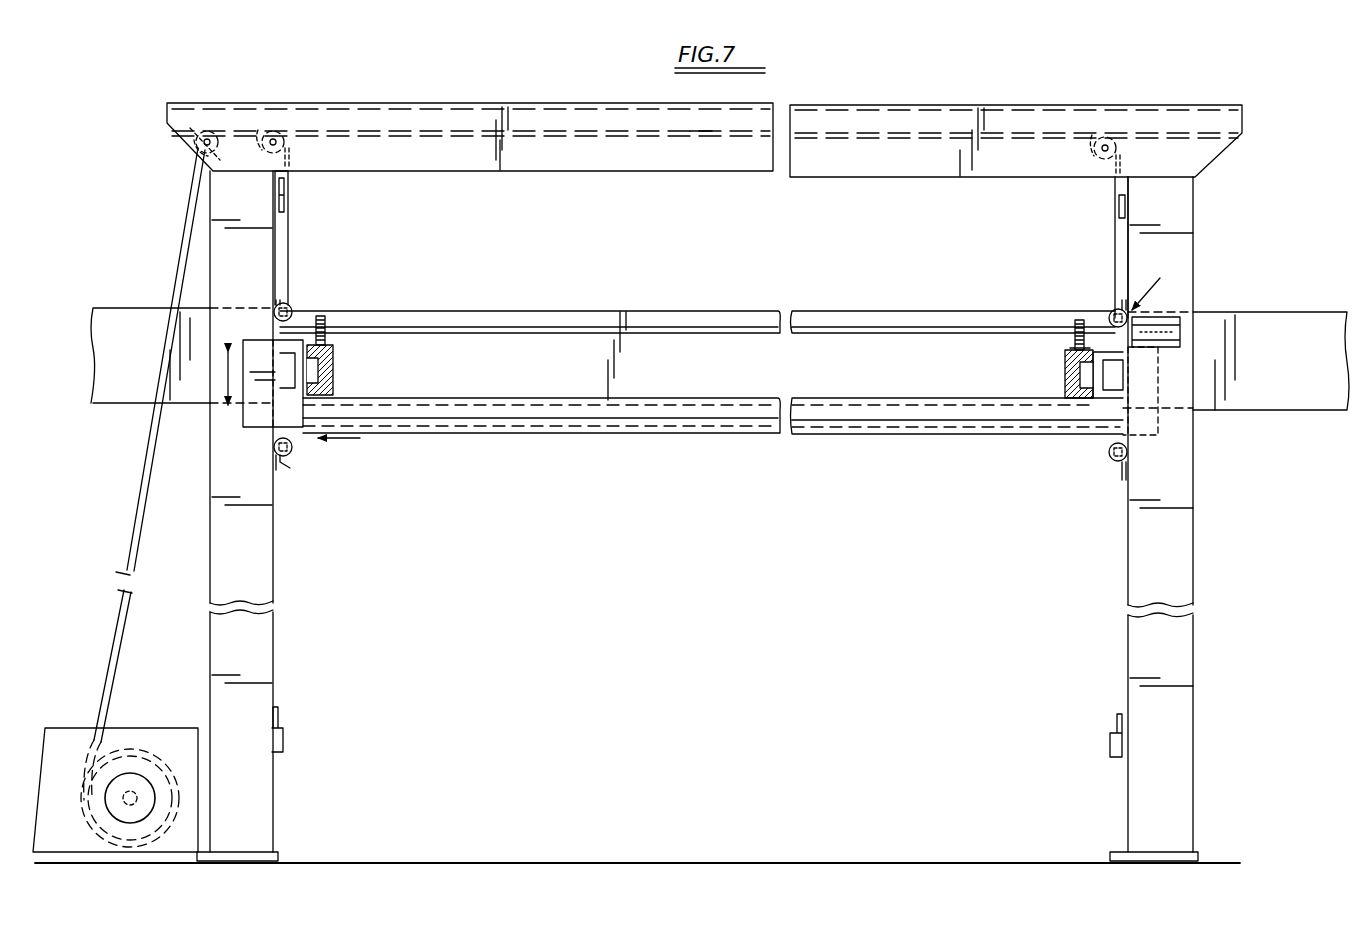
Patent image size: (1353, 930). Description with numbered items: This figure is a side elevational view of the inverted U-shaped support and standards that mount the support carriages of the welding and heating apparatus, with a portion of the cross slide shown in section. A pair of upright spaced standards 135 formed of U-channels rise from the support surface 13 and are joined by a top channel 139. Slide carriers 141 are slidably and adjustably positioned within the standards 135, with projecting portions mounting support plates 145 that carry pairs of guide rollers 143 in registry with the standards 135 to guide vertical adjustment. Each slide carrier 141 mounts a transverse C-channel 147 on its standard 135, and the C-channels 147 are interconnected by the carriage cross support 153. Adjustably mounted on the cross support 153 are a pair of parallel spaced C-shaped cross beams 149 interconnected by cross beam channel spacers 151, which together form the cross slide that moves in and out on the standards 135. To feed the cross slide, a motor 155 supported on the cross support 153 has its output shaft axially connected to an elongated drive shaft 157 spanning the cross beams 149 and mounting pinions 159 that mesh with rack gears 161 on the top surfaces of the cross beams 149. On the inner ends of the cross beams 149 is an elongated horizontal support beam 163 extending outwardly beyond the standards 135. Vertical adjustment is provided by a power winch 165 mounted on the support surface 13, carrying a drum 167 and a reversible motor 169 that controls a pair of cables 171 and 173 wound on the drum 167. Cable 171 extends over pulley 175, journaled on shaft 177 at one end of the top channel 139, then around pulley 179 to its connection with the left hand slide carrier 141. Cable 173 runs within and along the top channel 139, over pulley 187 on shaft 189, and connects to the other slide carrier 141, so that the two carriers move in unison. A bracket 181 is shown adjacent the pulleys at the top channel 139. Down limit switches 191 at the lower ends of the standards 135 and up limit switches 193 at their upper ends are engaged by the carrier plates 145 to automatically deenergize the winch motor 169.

The support surface 13 is at (893, 863).
The standards 135 is at (222, 615).
The top channel 139 is at (980, 106).
The slide carriers 141 is at (750, 353).
The guide rollers 143 is at (291, 306).
The support plates 145 is at (275, 300).
The C-channel 147 is at (285, 368).
The cross beams 149 is at (332, 370).
The cross beam channel spacers 151 is at (742, 410).
The carriage cross support 153 is at (1005, 425).
The motor 155 is at (1165, 325).
The drive shaft 157 is at (960, 325).
The pinions 159 is at (330, 320).
The rack gears 161 is at (1075, 342).
The support beam 163 is at (130, 318).
The power winch 165 is at (65, 715).
The drum 167 is at (148, 760).
The reversible motor 169 is at (120, 820).
The cable 171 is at (288, 243).
The cable 173 is at (698, 136).
The pulley 175 is at (188, 142).
The shaft 177 is at (210, 139).
The pulley 179 is at (290, 150).
The pulley bracket 181 is at (270, 148).
The pulley 187 is at (1090, 160).
The shaft 189 is at (1118, 148).
The down limit switches 191 is at (283, 718).
The up limit switches 193 is at (286, 204).